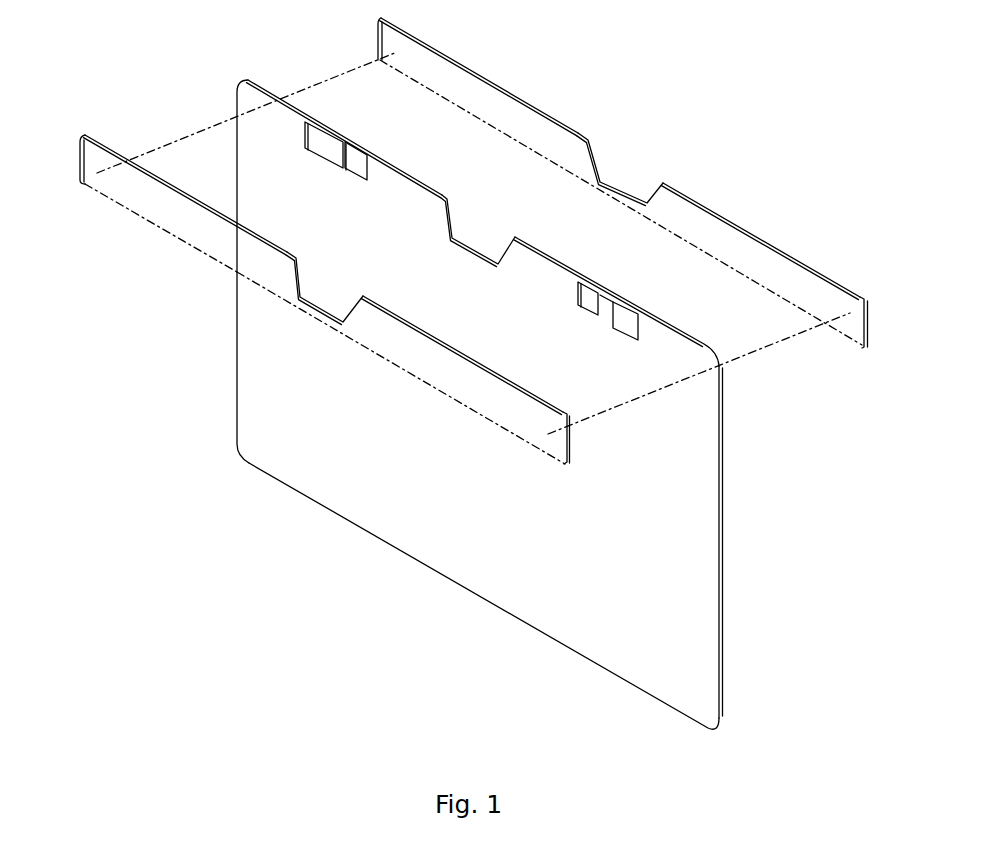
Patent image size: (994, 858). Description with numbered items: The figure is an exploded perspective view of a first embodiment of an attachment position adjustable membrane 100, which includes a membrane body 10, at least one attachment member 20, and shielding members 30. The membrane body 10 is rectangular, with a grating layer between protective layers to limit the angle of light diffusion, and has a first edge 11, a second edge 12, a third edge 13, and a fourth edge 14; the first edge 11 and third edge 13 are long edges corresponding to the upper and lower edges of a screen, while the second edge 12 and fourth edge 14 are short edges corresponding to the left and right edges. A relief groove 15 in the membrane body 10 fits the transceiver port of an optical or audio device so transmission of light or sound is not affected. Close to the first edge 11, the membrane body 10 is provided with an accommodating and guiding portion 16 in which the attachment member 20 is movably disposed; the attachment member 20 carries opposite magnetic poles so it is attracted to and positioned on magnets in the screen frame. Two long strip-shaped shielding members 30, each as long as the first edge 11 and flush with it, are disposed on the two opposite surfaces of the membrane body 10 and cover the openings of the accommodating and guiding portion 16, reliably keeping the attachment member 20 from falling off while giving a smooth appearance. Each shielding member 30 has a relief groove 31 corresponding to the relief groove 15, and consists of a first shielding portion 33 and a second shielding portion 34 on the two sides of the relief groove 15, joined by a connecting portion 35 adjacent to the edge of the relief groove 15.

The attachment position adjustable membrane 100 is at (628, 55).
The membrane body 10 is at (387, 500).
The first edge 11 is at (700, 343).
The second edge 12 is at (722, 515).
The third edge 13 is at (562, 643).
The fourth edge 14 is at (235, 303).
The relief groove 15 is at (473, 250).
The accommodating and guiding portion 16 is at (358, 166).
The attachment member 20 is at (328, 148).
The shielding member 30 is at (143, 193).
The relief groove 31 is at (620, 192).
The first shielding portion 33 is at (178, 237).
The second shielding portion 34 is at (443, 392).
The connecting portion 35 is at (315, 313).